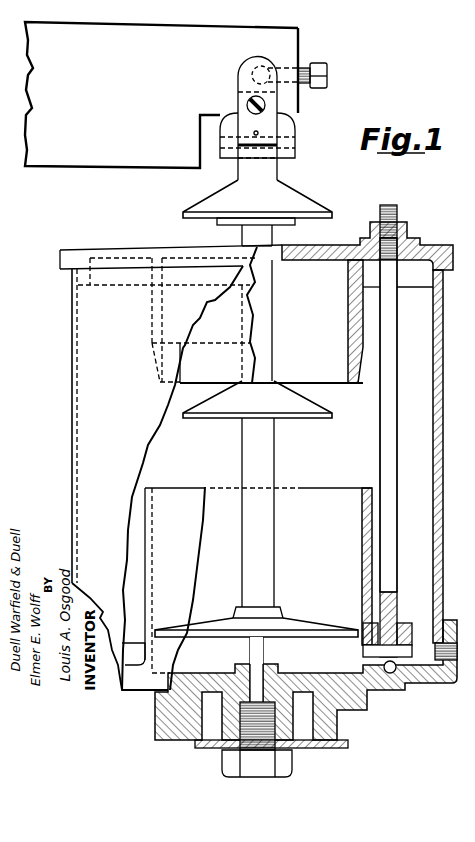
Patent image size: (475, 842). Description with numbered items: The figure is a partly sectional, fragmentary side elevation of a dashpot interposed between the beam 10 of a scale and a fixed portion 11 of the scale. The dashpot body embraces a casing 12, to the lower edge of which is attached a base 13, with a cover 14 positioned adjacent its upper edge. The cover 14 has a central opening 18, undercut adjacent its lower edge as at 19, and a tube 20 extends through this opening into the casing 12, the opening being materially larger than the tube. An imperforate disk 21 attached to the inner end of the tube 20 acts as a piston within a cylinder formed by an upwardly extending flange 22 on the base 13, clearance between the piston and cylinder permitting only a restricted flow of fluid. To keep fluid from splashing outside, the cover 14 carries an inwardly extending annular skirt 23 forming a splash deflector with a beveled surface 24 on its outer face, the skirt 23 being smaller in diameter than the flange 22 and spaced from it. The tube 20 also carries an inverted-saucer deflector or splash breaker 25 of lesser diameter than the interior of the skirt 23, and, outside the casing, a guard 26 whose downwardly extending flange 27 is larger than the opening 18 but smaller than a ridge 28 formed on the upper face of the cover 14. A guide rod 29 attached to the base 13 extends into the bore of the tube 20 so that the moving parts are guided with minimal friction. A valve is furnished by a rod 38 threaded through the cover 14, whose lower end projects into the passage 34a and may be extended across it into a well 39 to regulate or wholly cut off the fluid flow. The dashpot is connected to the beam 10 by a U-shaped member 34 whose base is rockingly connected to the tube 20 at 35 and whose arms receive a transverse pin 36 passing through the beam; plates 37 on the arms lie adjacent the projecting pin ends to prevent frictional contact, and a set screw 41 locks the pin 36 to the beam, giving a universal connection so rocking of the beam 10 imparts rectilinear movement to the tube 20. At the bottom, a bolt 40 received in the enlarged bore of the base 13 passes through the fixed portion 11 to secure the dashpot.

The beam 10 is at (161, 95).
The fixed portion 11 is at (350, 746).
The casing 12 is at (257, 468).
The base 13 is at (430, 680).
The cover 14 is at (346, 247).
The central opening 18 is at (277, 246).
The undercut 19 is at (278, 262).
The tube 20 is at (243, 463).
The disk 21 is at (311, 626).
The flange 22 is at (362, 512).
The annular skirt 23 is at (349, 347).
The beveled surface 24 is at (201, 320).
The deflector or splash breaker 25 is at (299, 419).
The guard 26 is at (305, 204).
The downwardly extending flange 27 is at (222, 226).
The ridge 28 is at (193, 252).
The rod 29 is at (254, 664).
The U-shaped member 34 is at (296, 128).
The passage 34a is at (406, 647).
The rocking connection 35 is at (290, 148).
The pin 36 is at (252, 73).
The plates 37 is at (244, 118).
The rod 38 is at (380, 431).
The well 39 is at (390, 675).
The bolt 40 is at (250, 730).
The set screw 41 is at (323, 58).